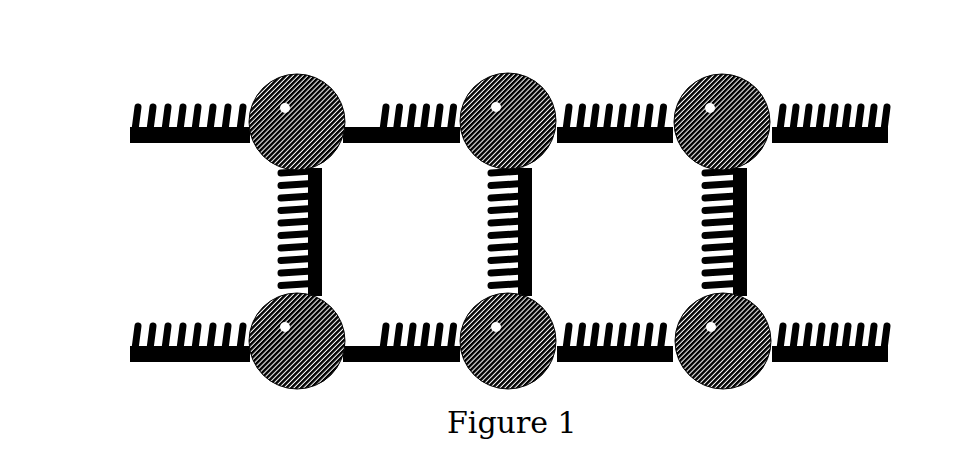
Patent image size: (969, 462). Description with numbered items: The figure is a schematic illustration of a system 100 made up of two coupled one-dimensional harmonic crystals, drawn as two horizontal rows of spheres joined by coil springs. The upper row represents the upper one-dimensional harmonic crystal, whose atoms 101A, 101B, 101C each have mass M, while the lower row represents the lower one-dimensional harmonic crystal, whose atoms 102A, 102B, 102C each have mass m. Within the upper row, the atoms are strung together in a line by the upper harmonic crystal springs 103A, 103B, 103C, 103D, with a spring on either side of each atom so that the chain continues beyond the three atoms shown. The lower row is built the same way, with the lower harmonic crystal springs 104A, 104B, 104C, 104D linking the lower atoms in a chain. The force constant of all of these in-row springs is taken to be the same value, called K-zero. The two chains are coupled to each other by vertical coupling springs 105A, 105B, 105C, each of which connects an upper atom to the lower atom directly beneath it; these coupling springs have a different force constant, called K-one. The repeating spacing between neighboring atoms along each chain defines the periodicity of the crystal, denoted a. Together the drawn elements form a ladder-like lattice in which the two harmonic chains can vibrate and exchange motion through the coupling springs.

The system 100 is at (112, 214).
The atom 101A is at (300, 80).
The atom 101B is at (508, 80).
The atom 101C is at (726, 83).
The atom 102A is at (300, 385).
The atom 102B is at (517, 385).
The atom 102C is at (730, 375).
The upper 1-D harmonic crystal spring 103A is at (200, 110).
The upper 1-D harmonic crystal spring 103B is at (398, 110).
The upper 1-D harmonic crystal spring 103C is at (612, 110).
The upper 1-D harmonic crystal spring 103D is at (823, 110).
The lower 1-D harmonic crystal spring 104A is at (185, 350).
The lower 1-D harmonic crystal spring 104B is at (415, 350).
The lower 1-D harmonic crystal spring 104C is at (622, 350).
The lower 1-D harmonic crystal spring 104D is at (822, 350).
The coupling spring 105A is at (322, 230).
The coupling spring 105B is at (532, 230).
The coupling spring 105C is at (747, 230).